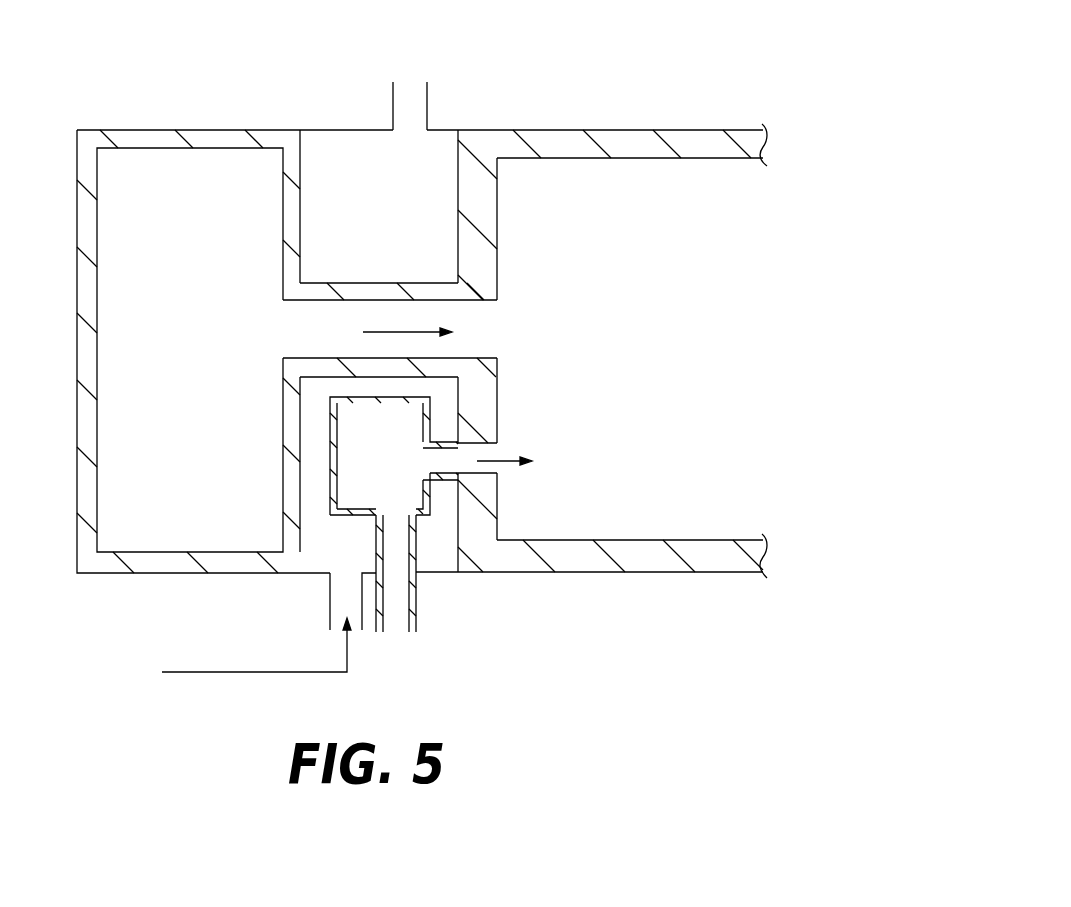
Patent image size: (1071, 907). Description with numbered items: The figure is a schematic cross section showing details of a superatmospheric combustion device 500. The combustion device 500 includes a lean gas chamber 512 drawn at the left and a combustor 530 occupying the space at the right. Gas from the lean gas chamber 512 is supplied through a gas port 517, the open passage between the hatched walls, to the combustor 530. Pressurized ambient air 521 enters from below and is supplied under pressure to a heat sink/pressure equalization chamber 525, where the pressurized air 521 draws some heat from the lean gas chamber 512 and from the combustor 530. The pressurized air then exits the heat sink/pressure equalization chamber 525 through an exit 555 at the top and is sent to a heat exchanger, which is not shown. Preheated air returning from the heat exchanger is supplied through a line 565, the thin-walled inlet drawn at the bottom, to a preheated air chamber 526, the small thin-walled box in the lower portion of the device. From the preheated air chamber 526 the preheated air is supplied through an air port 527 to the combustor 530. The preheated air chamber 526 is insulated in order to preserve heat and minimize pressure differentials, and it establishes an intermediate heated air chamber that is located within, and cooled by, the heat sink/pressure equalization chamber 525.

The combustion device 500 is at (192, 118).
The lean gas chamber 512 is at (215, 362).
The gas port 517 is at (478, 333).
The preheated air chamber 526 is at (409, 469).
The air port 527 is at (493, 467).
The heat sink/pressure equalization chamber 525 is at (317, 552).
The combustor 530 is at (736, 362).
The exit 555 is at (411, 100).
The pressurized ambient air 521 is at (200, 658).
The line 565 is at (398, 628).